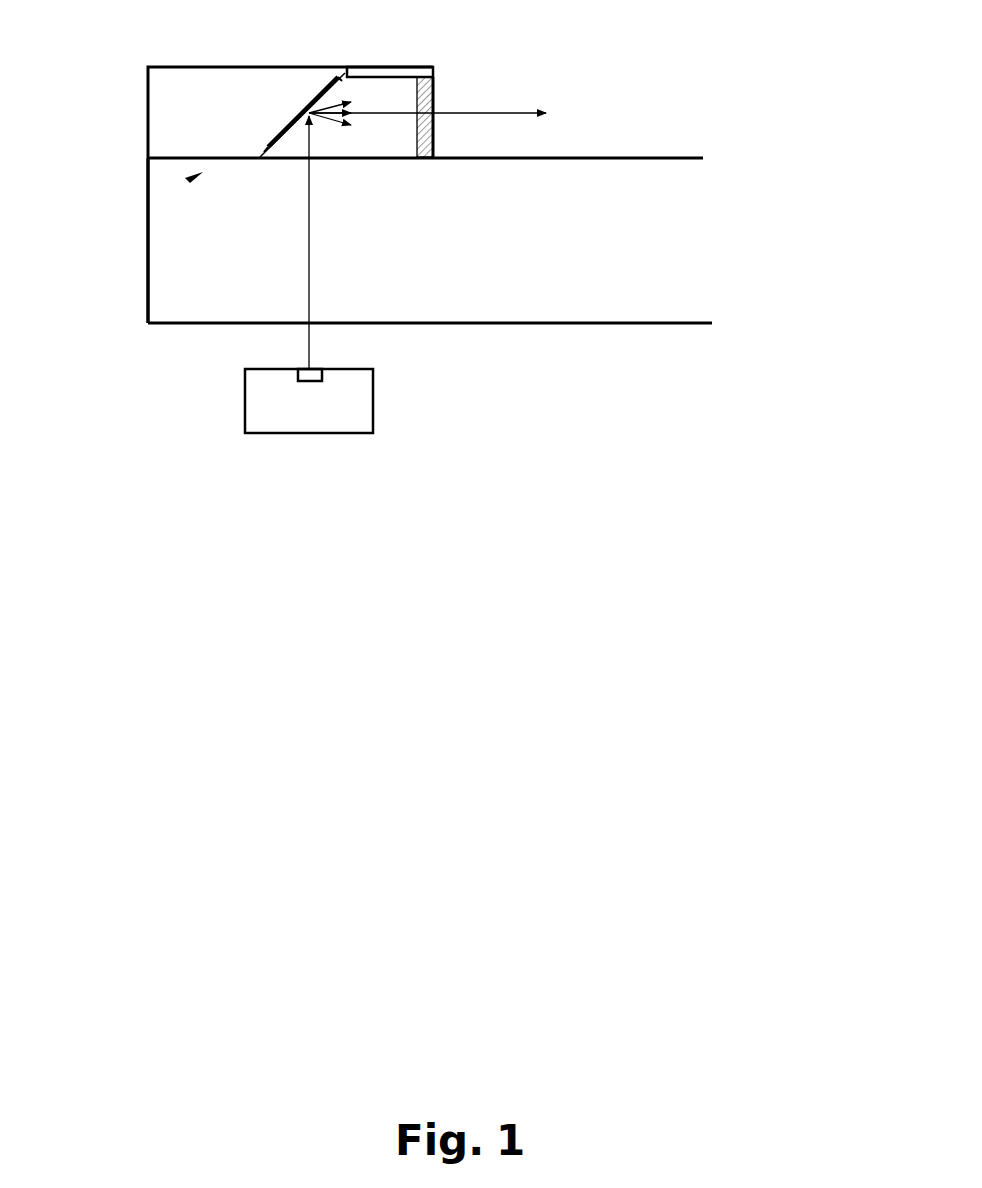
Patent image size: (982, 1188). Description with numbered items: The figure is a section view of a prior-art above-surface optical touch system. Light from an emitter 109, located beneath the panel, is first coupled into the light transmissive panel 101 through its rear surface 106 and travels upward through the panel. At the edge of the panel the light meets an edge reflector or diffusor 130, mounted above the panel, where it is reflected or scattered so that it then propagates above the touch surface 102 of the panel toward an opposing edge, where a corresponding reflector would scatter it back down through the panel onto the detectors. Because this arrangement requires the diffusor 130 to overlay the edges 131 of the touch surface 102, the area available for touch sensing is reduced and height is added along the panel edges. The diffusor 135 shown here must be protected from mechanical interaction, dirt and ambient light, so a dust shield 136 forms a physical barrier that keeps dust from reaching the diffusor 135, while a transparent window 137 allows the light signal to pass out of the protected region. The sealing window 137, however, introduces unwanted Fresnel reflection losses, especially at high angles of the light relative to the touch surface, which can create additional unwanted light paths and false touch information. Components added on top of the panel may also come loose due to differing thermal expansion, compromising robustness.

The light transmissive panel 101 is at (655, 307).
The touch surface 102 is at (617, 156).
The rear surface 106 is at (462, 318).
The emitter 109 is at (308, 381).
The edge reflector or diffusor 130 is at (148, 133).
The edges of the touch surface 131 is at (198, 178).
The diffusor 135 is at (317, 92).
The dust shield 136 is at (393, 65).
The transparent window 137 is at (435, 108).